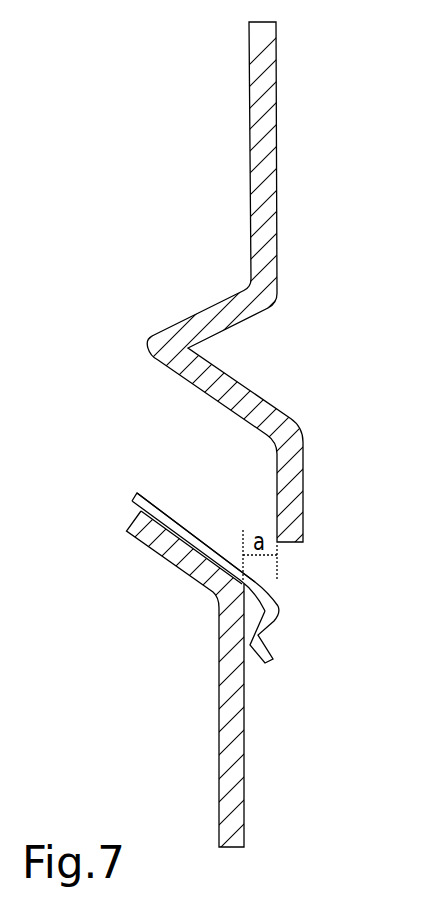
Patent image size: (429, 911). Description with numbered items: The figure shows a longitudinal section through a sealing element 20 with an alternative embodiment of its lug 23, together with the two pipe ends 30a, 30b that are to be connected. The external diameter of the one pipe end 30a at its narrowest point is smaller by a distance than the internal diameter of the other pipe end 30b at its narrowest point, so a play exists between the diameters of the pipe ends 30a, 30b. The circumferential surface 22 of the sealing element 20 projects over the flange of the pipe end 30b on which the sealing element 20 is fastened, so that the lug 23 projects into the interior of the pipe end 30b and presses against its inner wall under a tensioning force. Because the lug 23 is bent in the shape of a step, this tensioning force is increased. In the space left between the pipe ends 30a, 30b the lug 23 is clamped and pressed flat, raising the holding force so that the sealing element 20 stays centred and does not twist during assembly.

The sealing element 20 is at (203, 546).
The circumferential surface 22 is at (175, 518).
The lug 23 is at (262, 638).
The pipe end 30a is at (283, 452).
The pipe end 30b is at (211, 597).